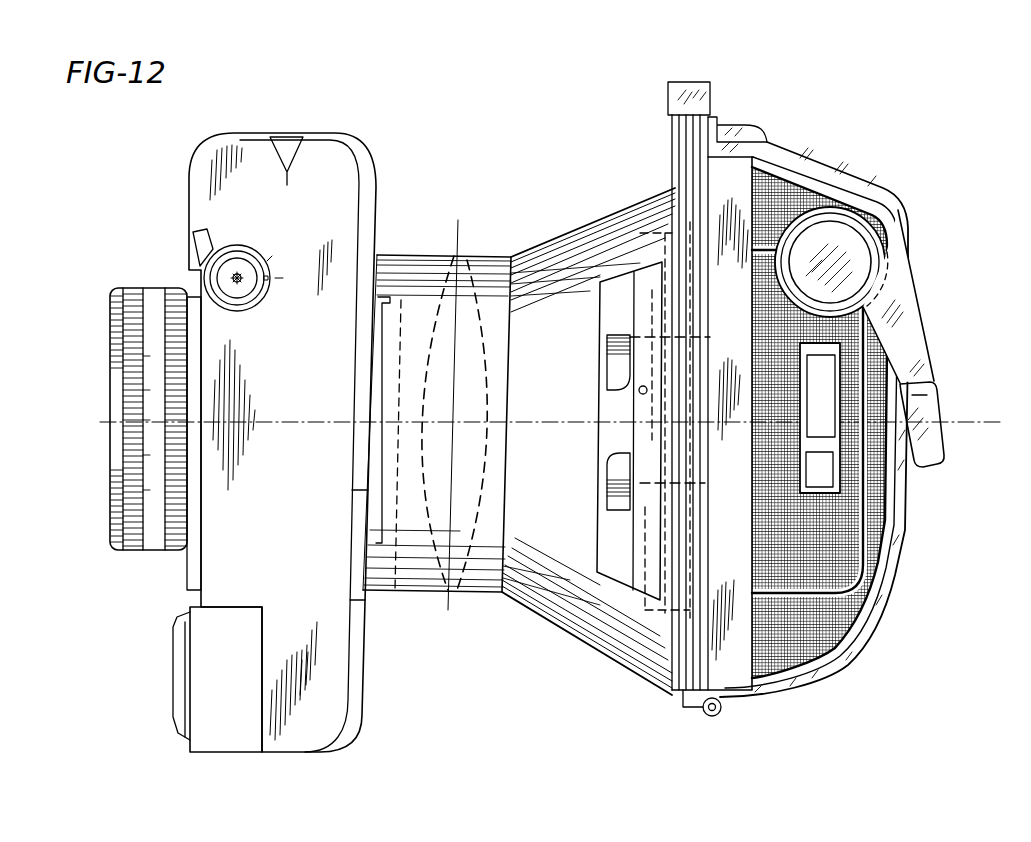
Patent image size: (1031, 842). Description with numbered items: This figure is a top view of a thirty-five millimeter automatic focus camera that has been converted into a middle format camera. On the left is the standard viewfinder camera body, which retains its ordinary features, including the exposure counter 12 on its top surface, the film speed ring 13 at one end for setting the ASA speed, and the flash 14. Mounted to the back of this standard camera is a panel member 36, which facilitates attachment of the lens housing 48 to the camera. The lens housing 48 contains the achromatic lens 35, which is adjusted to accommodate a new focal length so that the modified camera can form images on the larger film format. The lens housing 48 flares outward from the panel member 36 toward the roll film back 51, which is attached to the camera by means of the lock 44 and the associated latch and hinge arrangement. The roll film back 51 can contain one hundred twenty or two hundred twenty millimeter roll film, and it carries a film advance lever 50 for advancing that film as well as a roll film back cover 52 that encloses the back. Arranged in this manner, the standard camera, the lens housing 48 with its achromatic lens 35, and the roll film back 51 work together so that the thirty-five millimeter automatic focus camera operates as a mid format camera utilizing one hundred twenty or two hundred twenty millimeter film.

The exposure counter 12 is at (297, 134).
The film speed ring 13 is at (148, 548).
The flash 14 is at (170, 722).
The achromatic lens 35 is at (430, 565).
The panel member 36 is at (376, 222).
The lock 44 is at (597, 443).
The lens housing 48 is at (553, 617).
The film advance lever 50 is at (938, 417).
The roll film back 51 is at (805, 707).
The roll film back cover 52 is at (903, 597).